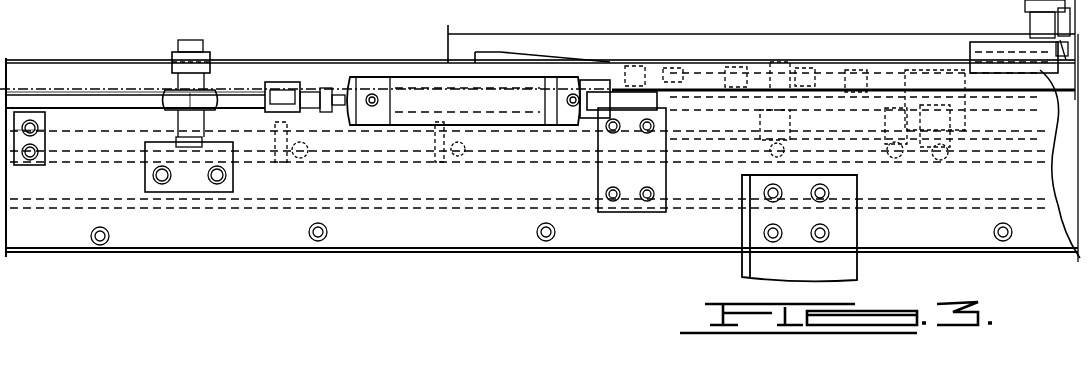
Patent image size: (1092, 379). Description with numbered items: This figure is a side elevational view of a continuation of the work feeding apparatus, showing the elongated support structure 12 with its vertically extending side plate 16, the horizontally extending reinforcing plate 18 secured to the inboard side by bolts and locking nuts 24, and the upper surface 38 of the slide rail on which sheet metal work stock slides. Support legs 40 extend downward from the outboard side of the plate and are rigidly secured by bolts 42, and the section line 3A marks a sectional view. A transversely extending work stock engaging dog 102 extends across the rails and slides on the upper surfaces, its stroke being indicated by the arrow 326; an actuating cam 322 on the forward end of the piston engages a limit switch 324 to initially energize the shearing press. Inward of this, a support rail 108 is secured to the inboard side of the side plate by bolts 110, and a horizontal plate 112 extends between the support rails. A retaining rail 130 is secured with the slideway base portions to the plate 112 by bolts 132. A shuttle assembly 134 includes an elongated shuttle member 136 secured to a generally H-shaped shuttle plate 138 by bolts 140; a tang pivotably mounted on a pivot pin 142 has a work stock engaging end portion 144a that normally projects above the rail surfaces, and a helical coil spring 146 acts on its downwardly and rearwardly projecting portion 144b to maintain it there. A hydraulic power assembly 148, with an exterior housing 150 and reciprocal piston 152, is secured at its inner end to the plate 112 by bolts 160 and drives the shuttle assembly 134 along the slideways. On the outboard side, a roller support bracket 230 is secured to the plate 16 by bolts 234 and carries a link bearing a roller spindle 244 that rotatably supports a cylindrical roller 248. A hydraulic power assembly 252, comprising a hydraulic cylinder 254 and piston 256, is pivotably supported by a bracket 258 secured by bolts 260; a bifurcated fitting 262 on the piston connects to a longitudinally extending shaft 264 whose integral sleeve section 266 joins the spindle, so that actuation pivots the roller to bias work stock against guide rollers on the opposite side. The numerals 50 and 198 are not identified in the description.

The elongated support structure 12 is at (549, 271).
The side plate 16 is at (414, 254).
The reinforcing plate 18 is at (363, 203).
The bolts and locking nuts 24 is at (92, 240).
The section line 3A is at (48, 72).
The upper surface 38 is at (286, 78).
The support legs 40 is at (738, 270).
The bolts 42 is at (780, 240).
The shaft 50 is at (92, 46).
The work stock engaging dog 102 is at (988, 42).
The support rail 108 is at (924, 206).
The bolts 110 is at (484, 124).
The horizontal plate 112 is at (936, 164).
The retaining rail 130 is at (345, 135).
The bolts 132 is at (462, 168).
The shuttle assembly 134 is at (635, 64).
The shuttle member 136 is at (826, 60).
The shuttle plate 138 is at (764, 110).
The bolts 140 is at (782, 62).
The pivot pin 142 is at (658, 120).
The work stock engaging end portion 144a is at (482, 52).
The downwardly and rearwardly projecting portion 144b is at (718, 162).
The helical coil spring 146 is at (688, 68).
The hydraulic power assembly 148 is at (1075, 165).
The exterior housing 150 is at (1000, 150).
The reciprocal piston 152 is at (876, 164).
The bolts 160 is at (958, 75).
The end plate 198 is at (1072, 246).
The roller support bracket 230 is at (228, 192).
The bolts 234 is at (214, 185).
The roller spindle 244 is at (196, 38).
The cylindrical roller 248 is at (178, 8).
The hydraulic power assembly 252 is at (520, 180).
The hydraulic cylinder 254 is at (360, 78).
The piston 256 is at (334, 90).
The bracket 258 is at (620, 88).
The bolts 260 is at (645, 138).
The bifurcated fitting 262 is at (278, 78).
The shaft 264 is at (97, 112).
The sleeve section 266 is at (150, 102).
The actuating cam 322 is at (1060, 42).
The limit switch 324 is at (1056, 56).
The arrow 326 is at (935, 22).